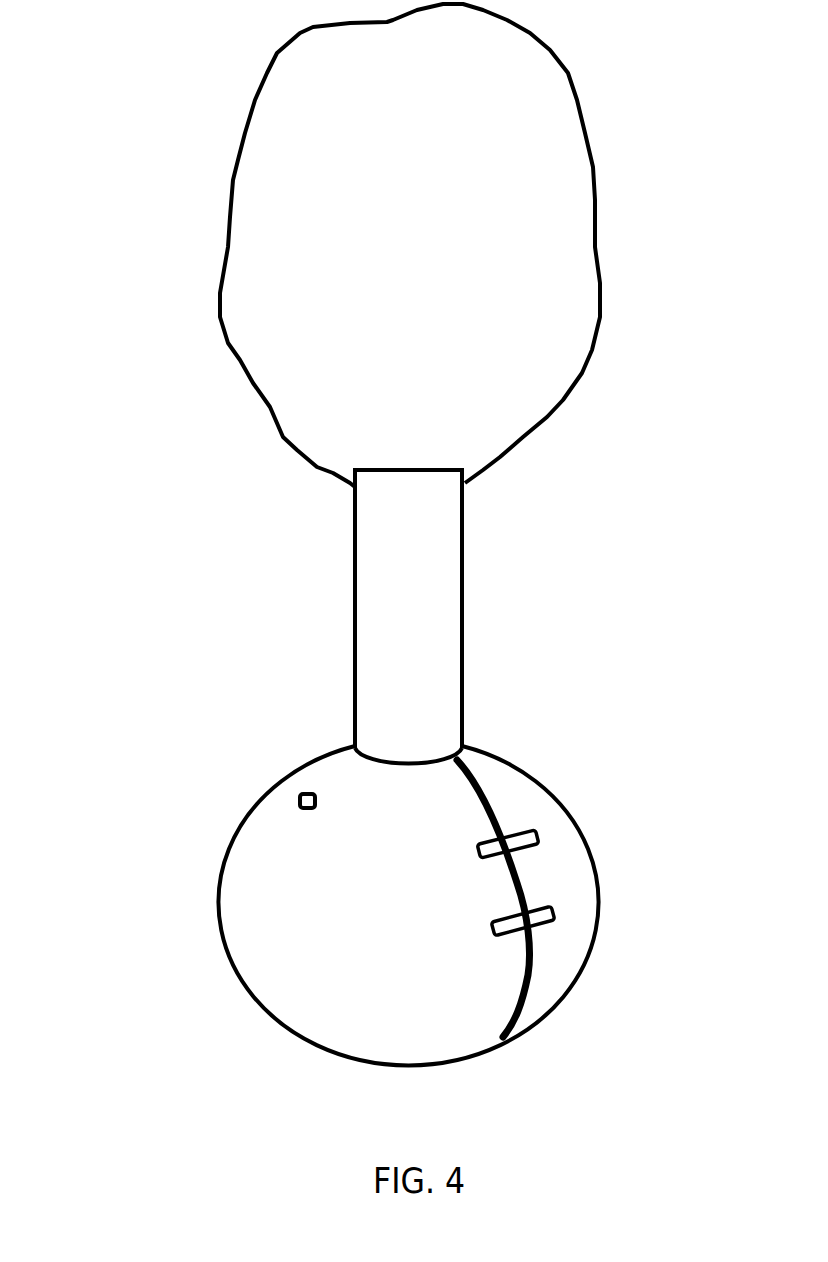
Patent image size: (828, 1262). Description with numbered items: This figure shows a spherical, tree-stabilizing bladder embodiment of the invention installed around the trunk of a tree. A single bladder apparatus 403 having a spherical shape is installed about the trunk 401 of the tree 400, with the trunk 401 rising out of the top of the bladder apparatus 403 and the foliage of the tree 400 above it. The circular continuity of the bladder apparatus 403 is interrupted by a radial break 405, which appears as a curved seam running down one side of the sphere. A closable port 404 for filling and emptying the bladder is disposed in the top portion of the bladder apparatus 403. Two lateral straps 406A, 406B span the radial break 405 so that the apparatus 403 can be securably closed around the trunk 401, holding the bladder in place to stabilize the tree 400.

The tree 400 is at (216, 298).
The trunk 401 is at (346, 639).
The bladder apparatus 403 is at (251, 910).
The closable port 404 is at (291, 798).
The radial break 405 is at (490, 792).
The lateral strap 406A is at (548, 837).
The lateral strap 406B is at (558, 917).